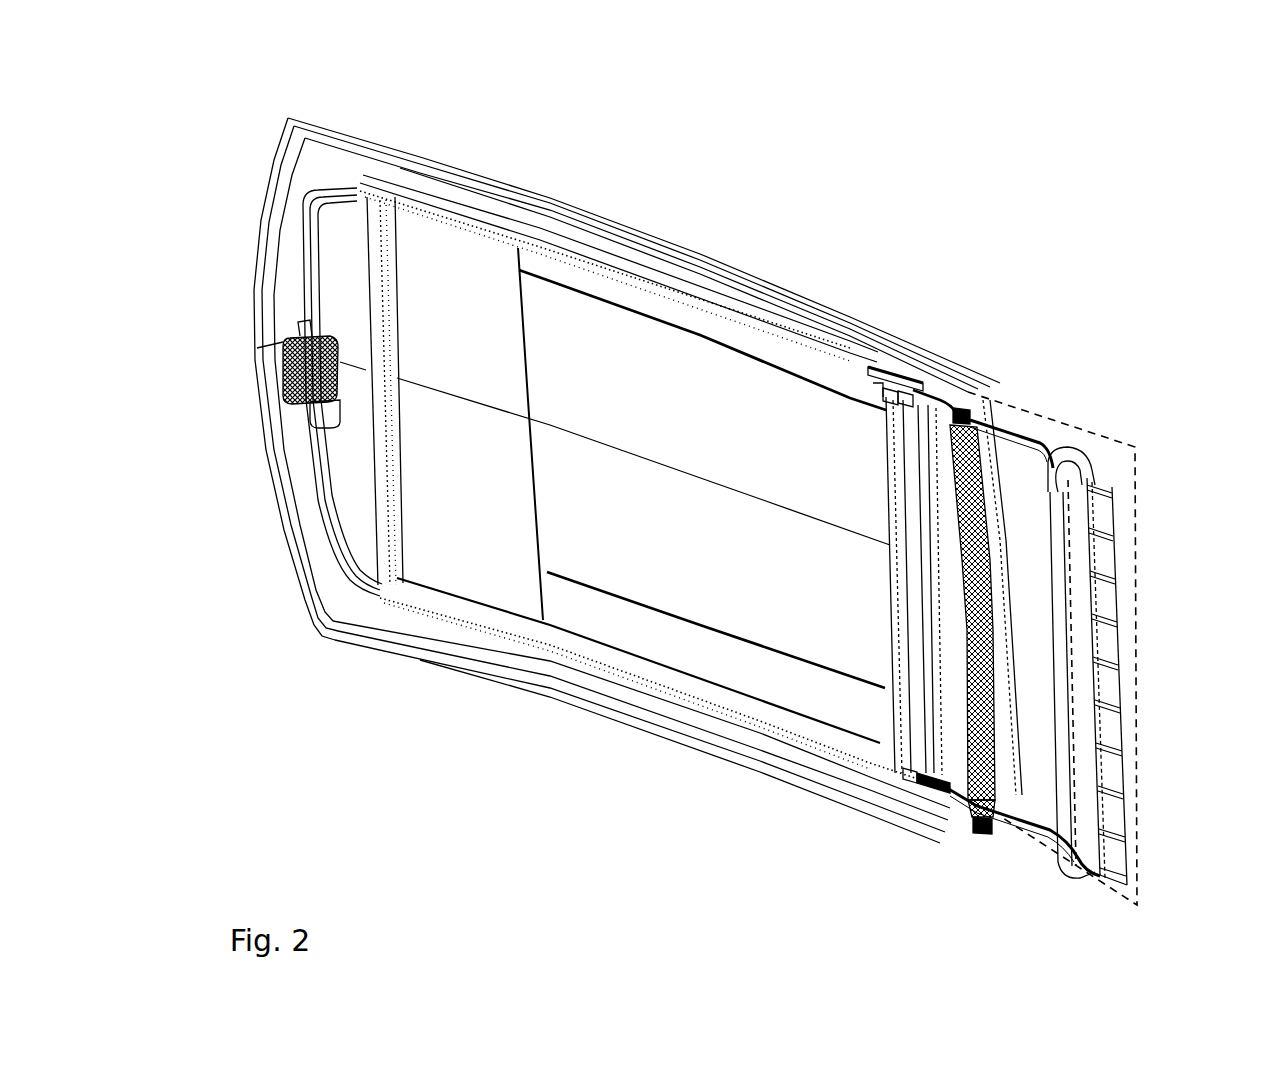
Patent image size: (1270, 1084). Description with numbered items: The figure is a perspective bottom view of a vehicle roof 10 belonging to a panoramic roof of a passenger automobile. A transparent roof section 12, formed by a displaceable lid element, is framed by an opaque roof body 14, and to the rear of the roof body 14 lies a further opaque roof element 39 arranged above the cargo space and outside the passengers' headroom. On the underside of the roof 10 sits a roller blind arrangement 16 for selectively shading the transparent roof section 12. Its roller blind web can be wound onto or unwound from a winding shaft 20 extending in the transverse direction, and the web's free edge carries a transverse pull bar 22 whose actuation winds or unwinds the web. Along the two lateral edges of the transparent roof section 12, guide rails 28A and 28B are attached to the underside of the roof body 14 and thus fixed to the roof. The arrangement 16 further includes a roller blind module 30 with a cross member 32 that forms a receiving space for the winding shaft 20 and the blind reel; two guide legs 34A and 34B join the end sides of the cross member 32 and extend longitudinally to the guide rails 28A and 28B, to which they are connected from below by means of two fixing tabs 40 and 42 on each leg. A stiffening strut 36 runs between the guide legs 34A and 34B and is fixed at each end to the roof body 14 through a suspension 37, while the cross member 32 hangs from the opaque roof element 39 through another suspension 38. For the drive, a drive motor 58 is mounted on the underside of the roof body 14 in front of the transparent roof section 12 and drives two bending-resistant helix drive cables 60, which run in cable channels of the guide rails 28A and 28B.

The vehicle roof 10 is at (1117, 237).
The transparent roof section 12 is at (712, 571).
The opaque roof body 14 is at (555, 668).
The roller blind arrangement 16 is at (1127, 755).
The winding shaft 20 is at (1078, 658).
The pull bar 22 is at (933, 730).
The guide rail 28A is at (657, 295).
The guide rail 28B is at (675, 683).
The roller blind module 30 is at (1143, 653).
The cross member 32 is at (1097, 618).
The guide leg 34A is at (1017, 430).
The guide leg 34B is at (1047, 843).
The stiffening strut 36 is at (975, 420).
The suspension 37 is at (963, 407).
The suspension 38 is at (1097, 673).
The opaque roof element 39 is at (1090, 437).
The fixing tab 40 is at (870, 367).
The fixing tab 42 is at (893, 392).
The drive motor 58 is at (285, 370).
The drive cable 60 is at (336, 187).